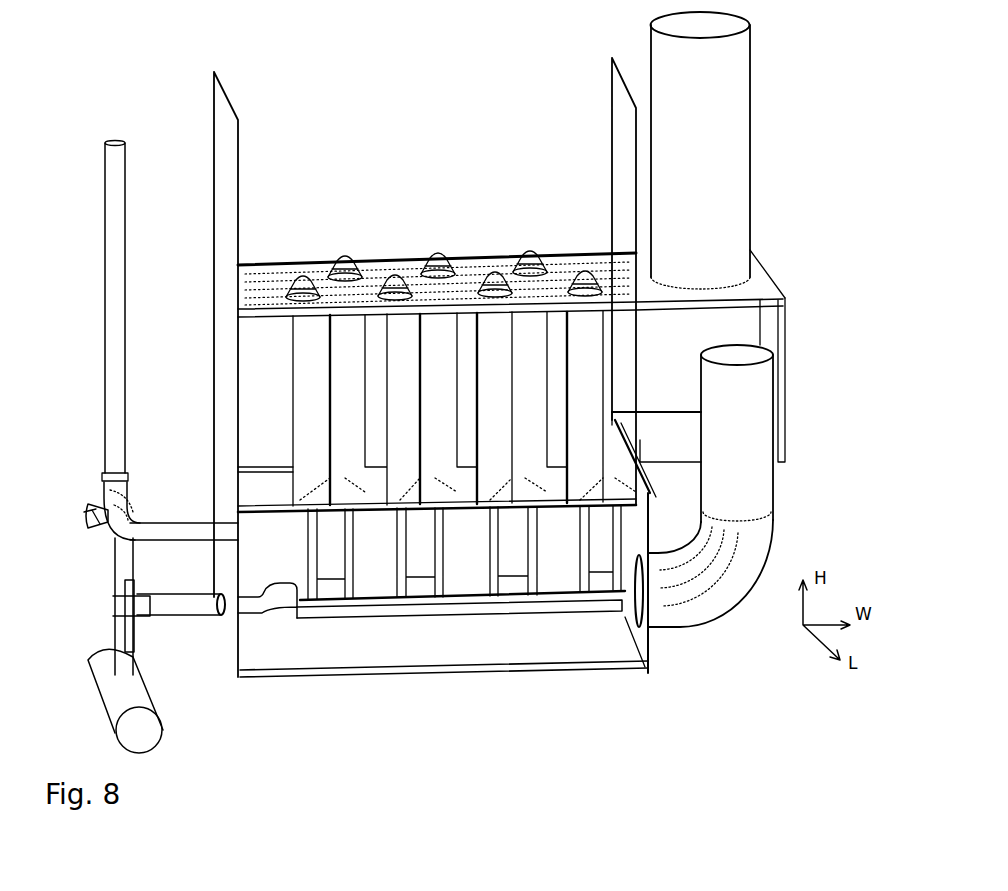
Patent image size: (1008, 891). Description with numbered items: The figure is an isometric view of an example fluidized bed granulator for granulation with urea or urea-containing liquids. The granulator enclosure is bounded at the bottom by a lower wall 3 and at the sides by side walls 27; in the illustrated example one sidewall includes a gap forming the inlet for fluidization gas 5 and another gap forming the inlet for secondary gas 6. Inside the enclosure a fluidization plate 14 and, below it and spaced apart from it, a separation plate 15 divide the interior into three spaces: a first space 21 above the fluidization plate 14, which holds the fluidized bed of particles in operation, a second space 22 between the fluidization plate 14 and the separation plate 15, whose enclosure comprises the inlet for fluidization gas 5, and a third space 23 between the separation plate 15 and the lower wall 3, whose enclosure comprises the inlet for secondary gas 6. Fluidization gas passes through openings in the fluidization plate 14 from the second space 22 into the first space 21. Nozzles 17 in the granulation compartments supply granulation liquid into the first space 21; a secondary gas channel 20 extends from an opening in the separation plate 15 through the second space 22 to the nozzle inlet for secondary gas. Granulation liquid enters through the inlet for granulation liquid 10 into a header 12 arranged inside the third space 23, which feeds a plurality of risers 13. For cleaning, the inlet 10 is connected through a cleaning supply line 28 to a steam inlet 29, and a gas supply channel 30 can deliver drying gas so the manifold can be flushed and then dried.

The lower wall 3 is at (444, 585).
The inlet for fluidization gas 5 is at (719, 285).
The inlet for secondary gas 6 is at (648, 594).
The inlet for granulation liquid 10 is at (213, 594).
The granulation liquid header 12 is at (343, 613).
The risers 13 is at (492, 560).
The fluidization plate 14 is at (270, 316).
The separation plate 15 is at (375, 515).
The nozzles 17 is at (531, 268).
The secondary gas channel 20 is at (598, 393).
The first space 21 is at (448, 113).
The second space 22 is at (258, 406).
The third space 23 is at (255, 636).
The side walls 27 is at (233, 166).
The cleaning supply line 28 is at (110, 573).
The steam inlet 29 is at (118, 398).
The gas supply channel 30 is at (164, 525).